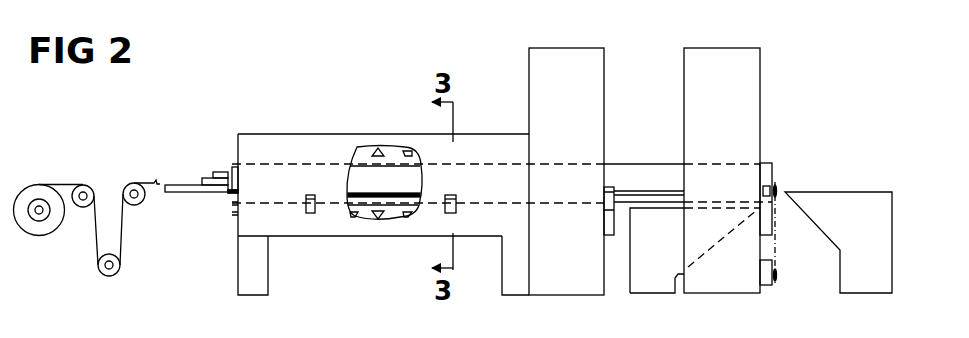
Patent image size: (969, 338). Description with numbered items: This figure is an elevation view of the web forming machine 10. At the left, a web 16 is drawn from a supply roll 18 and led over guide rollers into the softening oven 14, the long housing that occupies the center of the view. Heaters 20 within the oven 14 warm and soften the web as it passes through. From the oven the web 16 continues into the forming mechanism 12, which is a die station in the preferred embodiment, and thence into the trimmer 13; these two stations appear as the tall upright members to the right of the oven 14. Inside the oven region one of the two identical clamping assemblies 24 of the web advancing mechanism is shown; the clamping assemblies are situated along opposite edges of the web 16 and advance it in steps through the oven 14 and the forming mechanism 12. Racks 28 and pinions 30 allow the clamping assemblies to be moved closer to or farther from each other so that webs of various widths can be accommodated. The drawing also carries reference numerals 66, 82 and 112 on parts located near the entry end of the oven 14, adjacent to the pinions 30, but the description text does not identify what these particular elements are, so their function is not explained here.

The web forming machine 10 is at (309, 70).
The forming mechanism 12 is at (526, 56).
The trimmer 13 is at (729, 45).
The softening oven 14 is at (264, 130).
The web 16 is at (61, 184).
The supply roll 18 is at (43, 217).
The heaters 20 is at (381, 148).
The clamping assembly 24 is at (381, 186).
The racks 28 is at (310, 214).
The pinions 30 is at (228, 194).
The block 66 is at (218, 172).
The bar 82 is at (185, 193).
The block 112 is at (208, 178).